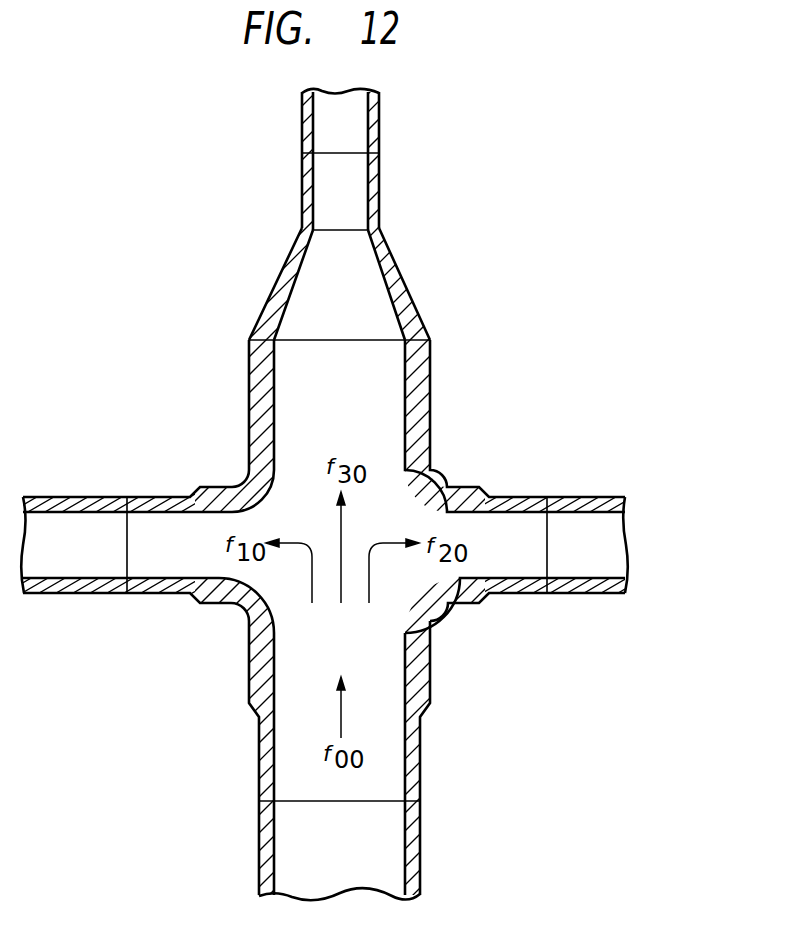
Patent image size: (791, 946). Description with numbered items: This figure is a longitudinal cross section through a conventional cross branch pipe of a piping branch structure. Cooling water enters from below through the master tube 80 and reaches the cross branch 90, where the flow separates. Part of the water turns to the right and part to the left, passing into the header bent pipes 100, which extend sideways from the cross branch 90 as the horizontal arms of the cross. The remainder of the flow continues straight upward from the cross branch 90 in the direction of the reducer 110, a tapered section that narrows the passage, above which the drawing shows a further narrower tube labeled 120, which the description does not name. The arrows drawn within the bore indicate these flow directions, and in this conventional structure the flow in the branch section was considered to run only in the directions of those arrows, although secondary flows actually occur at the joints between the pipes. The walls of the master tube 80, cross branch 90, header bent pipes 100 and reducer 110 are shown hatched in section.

The master tube 80 is at (267, 840).
The cross branch 90 is at (258, 672).
The header bent pipes 100 is at (75, 505).
The reducer 110 is at (403, 300).
The outlet pipe 120 is at (373, 123).